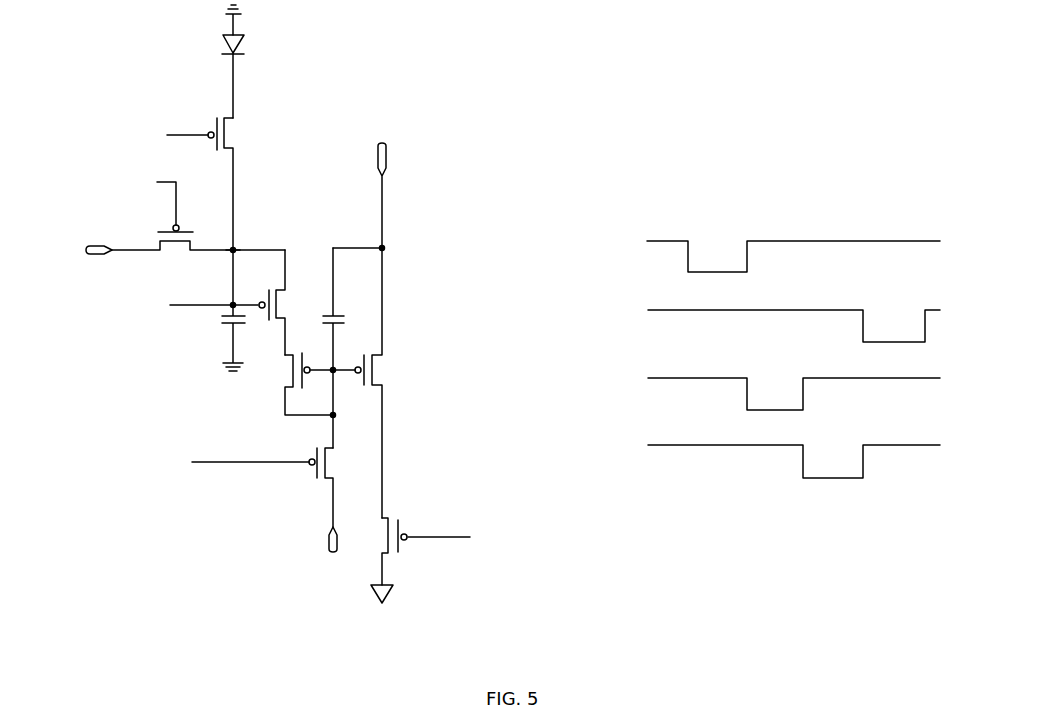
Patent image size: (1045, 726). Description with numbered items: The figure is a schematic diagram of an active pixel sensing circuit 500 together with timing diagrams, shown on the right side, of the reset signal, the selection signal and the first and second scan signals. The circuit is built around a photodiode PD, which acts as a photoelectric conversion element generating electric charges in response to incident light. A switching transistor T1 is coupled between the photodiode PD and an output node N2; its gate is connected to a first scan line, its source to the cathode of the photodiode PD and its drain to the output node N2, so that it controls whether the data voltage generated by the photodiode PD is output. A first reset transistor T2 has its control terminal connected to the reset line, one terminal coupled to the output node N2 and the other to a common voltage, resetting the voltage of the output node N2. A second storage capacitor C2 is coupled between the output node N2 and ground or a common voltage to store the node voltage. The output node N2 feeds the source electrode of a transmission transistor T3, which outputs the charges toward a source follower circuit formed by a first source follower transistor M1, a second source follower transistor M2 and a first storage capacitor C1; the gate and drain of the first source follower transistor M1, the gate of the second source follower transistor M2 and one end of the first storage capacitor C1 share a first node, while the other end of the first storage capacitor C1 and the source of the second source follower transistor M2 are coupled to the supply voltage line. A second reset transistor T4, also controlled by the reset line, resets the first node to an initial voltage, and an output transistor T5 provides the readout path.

The active pixel sensing circuit 500 is at (488, 324).
The photodiode PD is at (221, 61).
The switching transistor T1 is at (200, 181).
The first reset transistor T2 is at (198, 226).
The transmission transistor T3 is at (284, 302).
The second reset transistor T4 is at (262, 482).
The output transistor T5 is at (426, 547).
The first source follower transistor M1 is at (304, 384).
The second source follower transistor M2 is at (363, 383).
The first storage capacitor C1 is at (341, 348).
The second storage capacitor C2 is at (220, 310).
The output node N2 is at (241, 243).